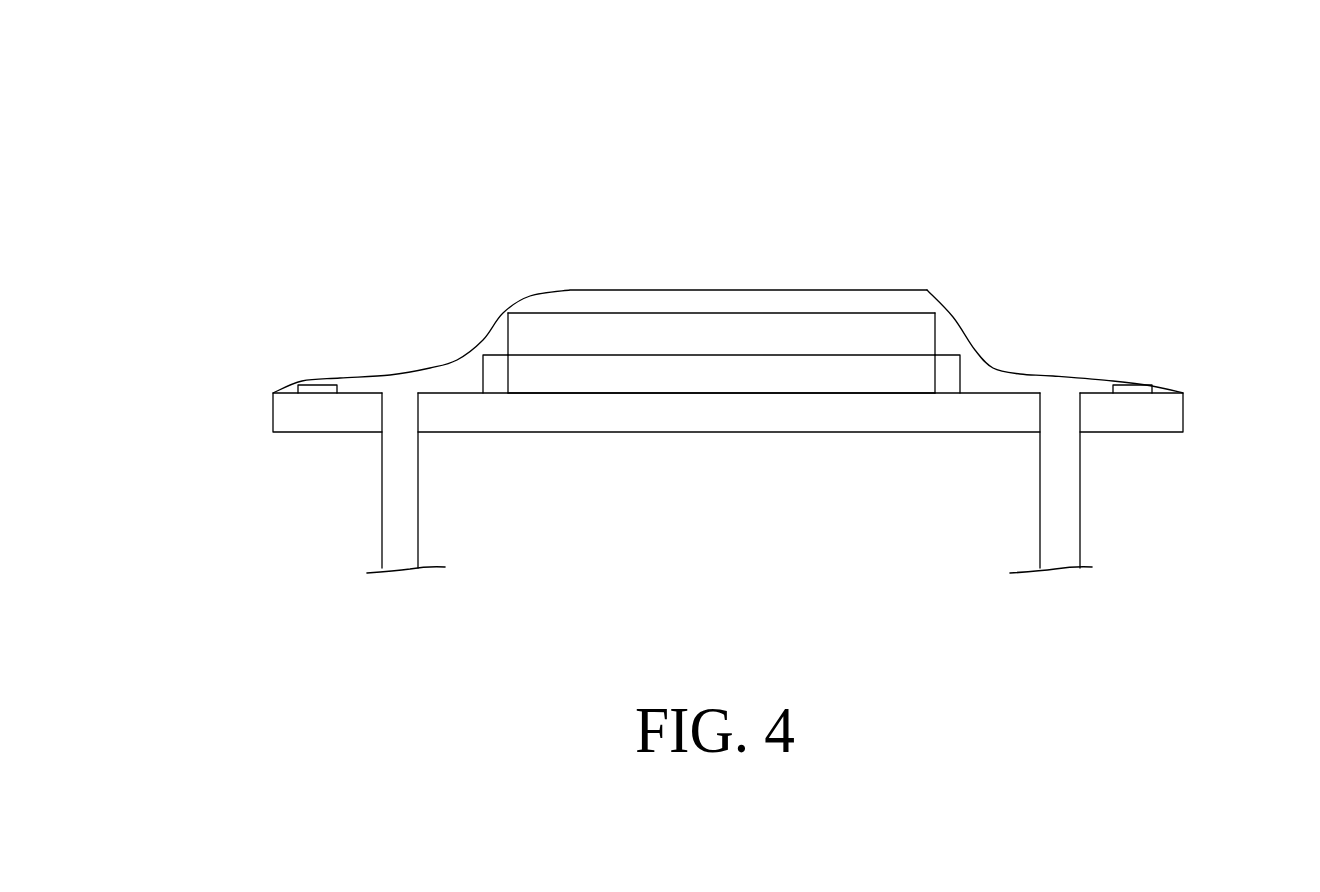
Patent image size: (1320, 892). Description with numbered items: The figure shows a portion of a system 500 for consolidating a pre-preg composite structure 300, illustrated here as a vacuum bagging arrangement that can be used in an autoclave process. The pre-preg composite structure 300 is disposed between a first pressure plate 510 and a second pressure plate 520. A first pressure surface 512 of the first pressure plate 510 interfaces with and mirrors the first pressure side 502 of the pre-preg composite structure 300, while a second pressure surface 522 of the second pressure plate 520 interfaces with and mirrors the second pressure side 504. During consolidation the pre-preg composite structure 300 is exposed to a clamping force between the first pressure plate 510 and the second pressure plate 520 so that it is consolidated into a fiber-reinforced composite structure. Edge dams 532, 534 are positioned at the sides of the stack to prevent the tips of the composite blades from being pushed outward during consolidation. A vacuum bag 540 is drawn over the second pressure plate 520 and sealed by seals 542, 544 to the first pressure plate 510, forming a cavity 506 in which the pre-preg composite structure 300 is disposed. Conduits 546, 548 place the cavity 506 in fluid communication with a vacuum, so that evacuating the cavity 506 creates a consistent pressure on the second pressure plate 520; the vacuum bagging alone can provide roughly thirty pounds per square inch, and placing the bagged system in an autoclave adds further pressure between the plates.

The system 500 is at (302, 218).
The pre-preg composite structure 300 is at (633, 369).
The first pressure side 502 is at (788, 396).
The second pressure side 504 is at (795, 351).
The cavity 506 is at (997, 380).
The first pressure plate 510 is at (628, 413).
The first pressure surface 512 is at (537, 390).
The second pressure plate 520 is at (682, 335).
The second pressure surface 522 is at (688, 355).
The edge dam 532 is at (493, 382).
The edge dam 534 is at (952, 378).
The vacuum bag 540 is at (877, 290).
The seal 542 is at (305, 380).
The seal 544 is at (1150, 388).
The conduit 546 is at (405, 503).
The conduit 548 is at (1048, 500).